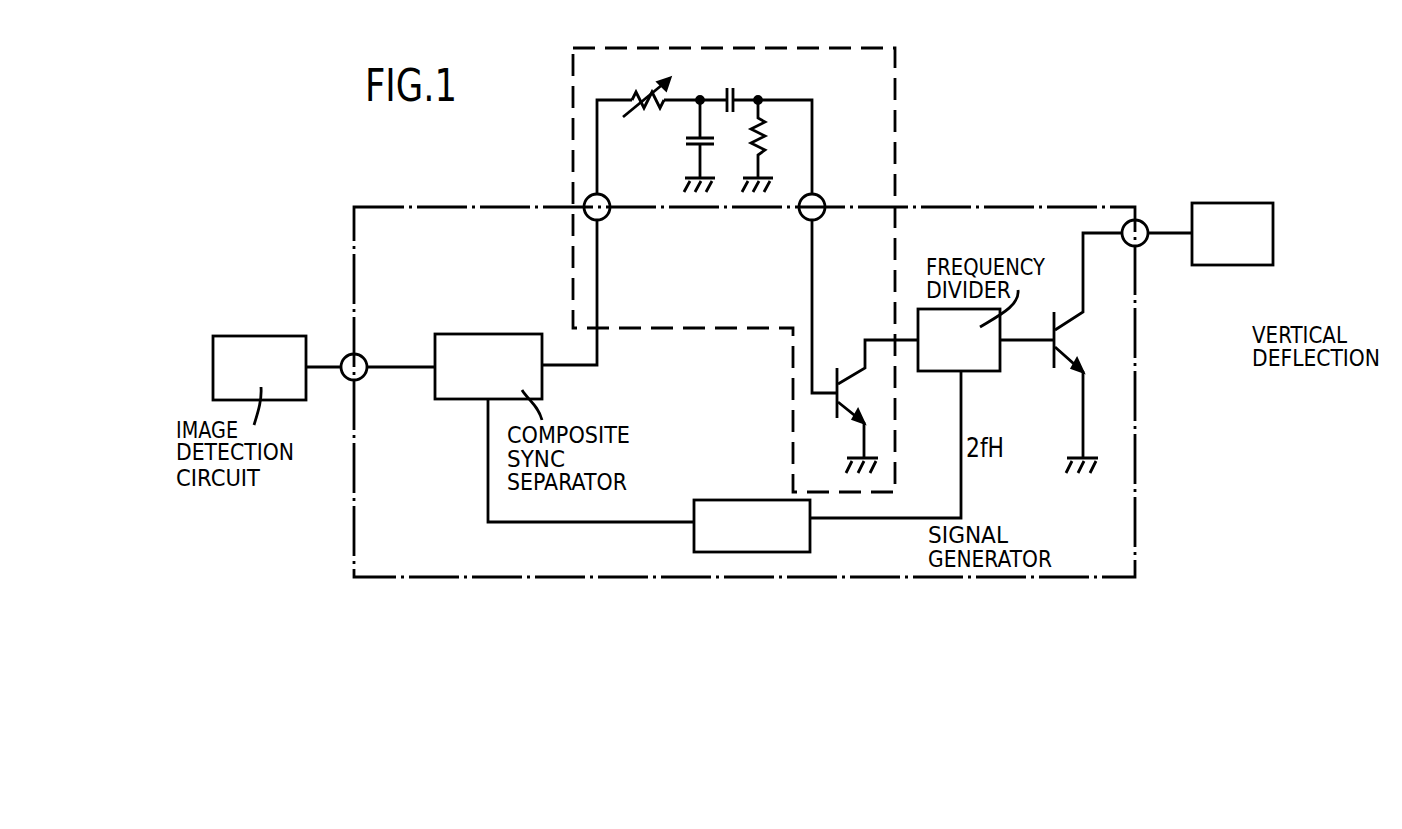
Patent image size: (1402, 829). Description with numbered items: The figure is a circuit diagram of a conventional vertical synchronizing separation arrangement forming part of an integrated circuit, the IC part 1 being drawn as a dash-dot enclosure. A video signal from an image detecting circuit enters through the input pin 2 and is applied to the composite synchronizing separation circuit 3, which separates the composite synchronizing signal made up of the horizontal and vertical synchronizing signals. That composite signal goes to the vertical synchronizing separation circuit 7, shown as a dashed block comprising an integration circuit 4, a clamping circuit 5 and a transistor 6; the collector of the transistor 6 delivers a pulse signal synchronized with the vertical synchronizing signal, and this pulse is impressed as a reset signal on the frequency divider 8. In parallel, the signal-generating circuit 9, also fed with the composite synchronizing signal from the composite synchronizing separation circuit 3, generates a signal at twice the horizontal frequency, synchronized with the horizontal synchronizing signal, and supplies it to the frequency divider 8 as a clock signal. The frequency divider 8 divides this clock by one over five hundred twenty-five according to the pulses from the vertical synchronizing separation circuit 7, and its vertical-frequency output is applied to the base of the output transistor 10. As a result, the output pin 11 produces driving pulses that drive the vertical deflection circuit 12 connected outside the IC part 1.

The IC part 1 is at (1135, 465).
The input pin 2 is at (349, 381).
The composite synchronizing separation circuit 3 is at (456, 399).
The integration circuit 4 is at (665, 150).
The clamping circuit 5 is at (741, 150).
The transistor 6 is at (858, 368).
The vertical synchronizing separation circuit 7 is at (895, 145).
The frequency divider 8 is at (1000, 355).
The signal-generating circuit 9 is at (810, 538).
The output transistor 10 is at (1047, 363).
The output pin 11 is at (1144, 245).
The vertical deflection circuit 12 is at (1222, 265).